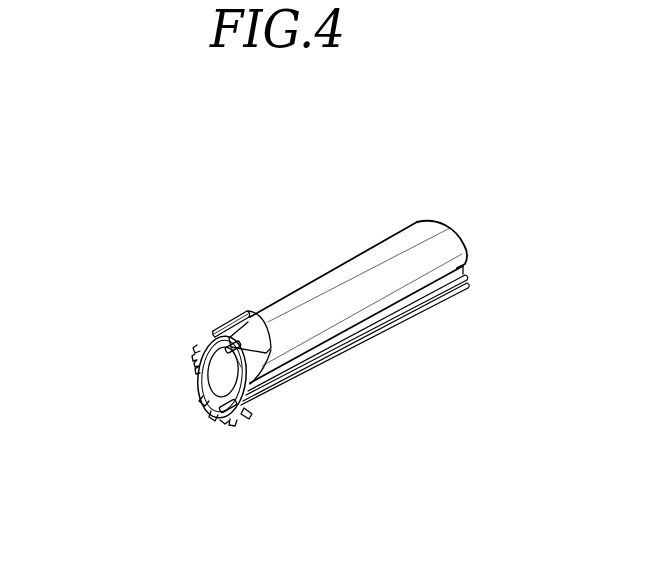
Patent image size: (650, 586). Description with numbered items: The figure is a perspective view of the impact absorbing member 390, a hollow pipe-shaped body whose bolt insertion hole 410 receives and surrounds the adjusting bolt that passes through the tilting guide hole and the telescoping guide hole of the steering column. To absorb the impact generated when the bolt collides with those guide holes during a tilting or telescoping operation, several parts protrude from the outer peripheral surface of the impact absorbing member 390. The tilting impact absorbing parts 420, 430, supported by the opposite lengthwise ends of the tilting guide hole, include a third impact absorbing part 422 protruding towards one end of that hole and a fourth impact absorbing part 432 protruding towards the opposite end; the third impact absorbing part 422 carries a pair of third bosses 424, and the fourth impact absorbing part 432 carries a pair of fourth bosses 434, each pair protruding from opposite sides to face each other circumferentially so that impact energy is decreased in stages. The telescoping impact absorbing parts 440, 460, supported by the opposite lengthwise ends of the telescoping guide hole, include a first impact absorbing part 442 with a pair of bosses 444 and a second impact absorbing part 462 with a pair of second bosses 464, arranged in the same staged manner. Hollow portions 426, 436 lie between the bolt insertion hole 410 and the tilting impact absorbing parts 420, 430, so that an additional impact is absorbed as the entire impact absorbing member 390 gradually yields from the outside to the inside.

The impact absorbing member 390 is at (81, 169).
The bolt insertion hole 410 is at (208, 390).
The tilting impact absorbing part 420 is at (268, 343).
The third impact absorbing part 422 is at (217, 325).
The third bosses 424 is at (252, 312).
The hollow portion 426 is at (195, 348).
The tilting impact absorbing part 430 is at (253, 417).
The fourth impact absorbing part 432 is at (224, 420).
The fourth bosses 434 is at (213, 415).
The hollow portion 436 is at (208, 397).
The telescoping impact absorbing part 440 is at (345, 262).
The first impact absorbing part 442 is at (196, 362).
The bosses 444 is at (196, 352).
The telescoping impact absorbing part 460 is at (445, 262).
The second impact absorbing part 462 is at (250, 410).
The second bosses 464 is at (303, 357).